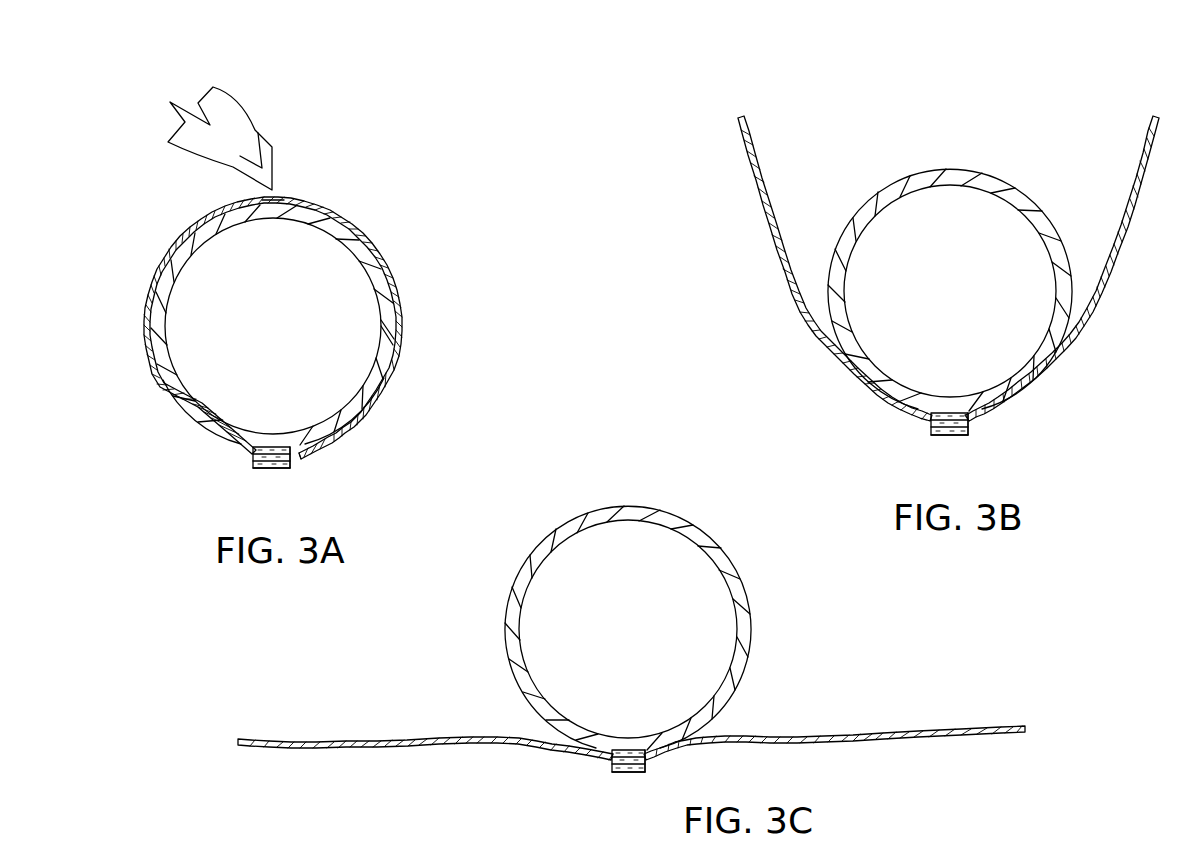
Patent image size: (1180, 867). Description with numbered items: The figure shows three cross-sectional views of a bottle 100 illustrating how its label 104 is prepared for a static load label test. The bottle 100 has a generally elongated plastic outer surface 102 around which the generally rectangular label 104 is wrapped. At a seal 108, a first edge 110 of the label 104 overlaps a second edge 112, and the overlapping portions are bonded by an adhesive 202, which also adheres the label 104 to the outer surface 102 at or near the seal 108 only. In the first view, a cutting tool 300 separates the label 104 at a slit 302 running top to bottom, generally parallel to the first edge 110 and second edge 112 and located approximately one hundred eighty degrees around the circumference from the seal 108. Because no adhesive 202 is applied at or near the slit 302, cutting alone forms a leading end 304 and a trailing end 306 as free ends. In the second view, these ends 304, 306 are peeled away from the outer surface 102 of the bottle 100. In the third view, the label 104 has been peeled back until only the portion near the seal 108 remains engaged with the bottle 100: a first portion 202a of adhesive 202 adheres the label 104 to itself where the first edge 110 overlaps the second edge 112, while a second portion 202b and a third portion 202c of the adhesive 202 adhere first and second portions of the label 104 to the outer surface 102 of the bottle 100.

In FIG. 3A, the bottle 100 is at (261, 351).
In FIG. 3B, the bottle 100 is at (931, 279).
In FIG. 3C, the bottle 100 is at (636, 663).
In FIG. 3A, the outer surface 102 is at (373, 253).
In FIG. 3B, the outer surface 102 is at (1020, 200).
In FIG. 3C, the outer surface 102 is at (700, 538).
In FIG. 3A, the label 104 is at (180, 244).
In FIG. 3B, the label 104 is at (931, 241).
In FIG. 3C, the label 104 is at (636, 725).
In FIG. 3A, the seal 108 is at (284, 450).
In FIG. 3B, the seal 108 is at (962, 417).
In FIG. 3C, the seal 108 is at (623, 749).
In FIG. 3A, the first edge 110 is at (253, 461).
In FIG. 3B, the first edge 110 is at (930, 428).
In FIG. 3C, the first edge 110 is at (610, 770).
In FIG. 3A, the second edge 112 is at (300, 455).
In FIG. 3B, the second edge 112 is at (978, 418).
In FIG. 3C, the second edge 112 is at (658, 758).
In FIG. 3A, the adhesive 202 is at (274, 447).
In FIG. 3B, the adhesive 202 is at (955, 413).
In FIG. 3C, the first portion of adhesive 202a is at (606, 762).
In FIG. 3C, the second portion of adhesive 202b is at (620, 750).
In FIG. 3C, the third portion of adhesive 202c is at (668, 746).
In FIG. 3A, the cutting tool 300 is at (270, 110).
In FIG. 3A, the slit 302 is at (274, 202).
In FIG. 3B, the leading end 304 is at (742, 116).
In FIG. 3C, the leading end 304 is at (238, 741).
In FIG. 3B, the trailing end 306 is at (1155, 116).
In FIG. 3C, the trailing end 306 is at (1026, 730).